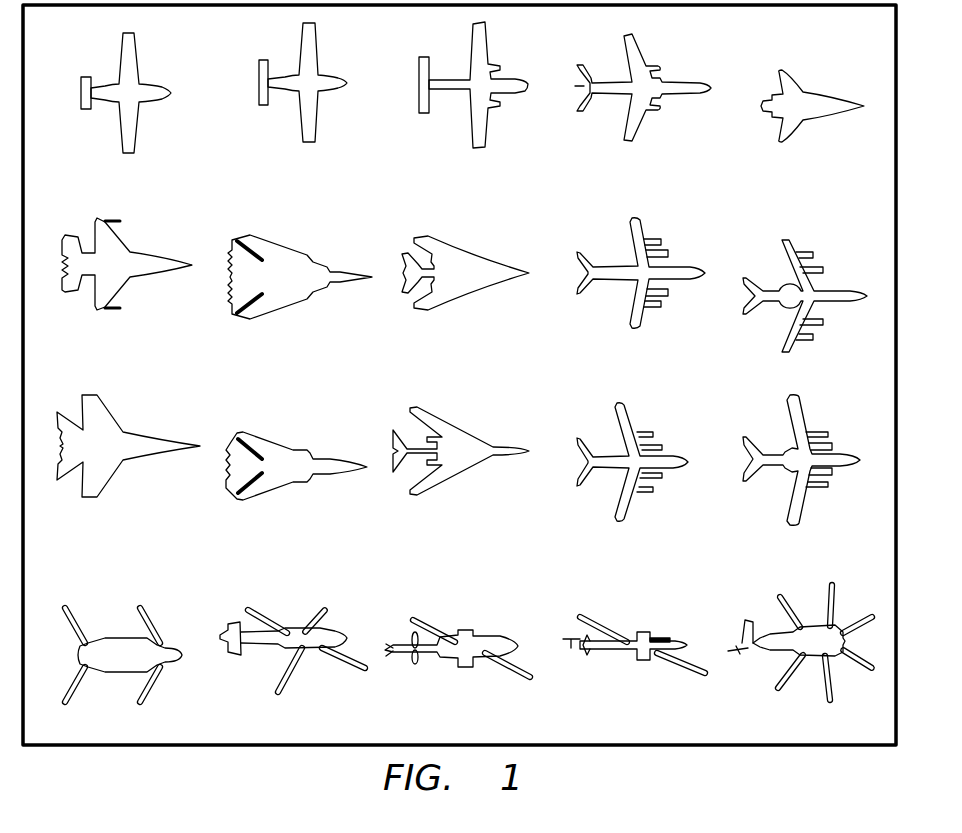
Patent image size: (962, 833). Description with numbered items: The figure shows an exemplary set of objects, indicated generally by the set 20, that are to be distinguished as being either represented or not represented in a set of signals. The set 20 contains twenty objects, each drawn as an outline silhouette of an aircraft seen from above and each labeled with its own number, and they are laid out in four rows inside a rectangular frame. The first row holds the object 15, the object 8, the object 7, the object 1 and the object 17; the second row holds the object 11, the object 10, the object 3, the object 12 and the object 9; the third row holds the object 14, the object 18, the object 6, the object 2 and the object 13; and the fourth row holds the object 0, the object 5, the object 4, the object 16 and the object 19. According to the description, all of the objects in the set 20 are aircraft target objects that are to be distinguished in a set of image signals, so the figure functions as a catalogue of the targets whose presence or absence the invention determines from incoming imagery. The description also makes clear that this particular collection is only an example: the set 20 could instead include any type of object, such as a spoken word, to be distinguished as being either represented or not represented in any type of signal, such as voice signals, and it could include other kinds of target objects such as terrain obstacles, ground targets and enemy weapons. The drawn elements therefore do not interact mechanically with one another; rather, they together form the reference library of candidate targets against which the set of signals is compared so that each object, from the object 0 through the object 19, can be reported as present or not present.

The set of objects 20 is at (198, 755).
The object 15 is at (126, 93).
The object 8 is at (303, 82).
The object 7 is at (473, 85).
The object 1 is at (643, 87).
The object 17 is at (812, 111).
The object 11 is at (127, 265).
The object 10 is at (300, 274).
The object 3 is at (465, 270).
The object 12 is at (641, 273).
The object 9 is at (805, 296).
The object 14 is at (128, 446).
The object 18 is at (296, 458).
The object 6 is at (461, 451).
The object 2 is at (632, 462).
The object 13 is at (809, 460).
The object 0 is at (122, 655).
The object 5 is at (294, 646).
The object 4 is at (459, 643).
The object 16 is at (635, 636).
The object 19 is at (801, 640).